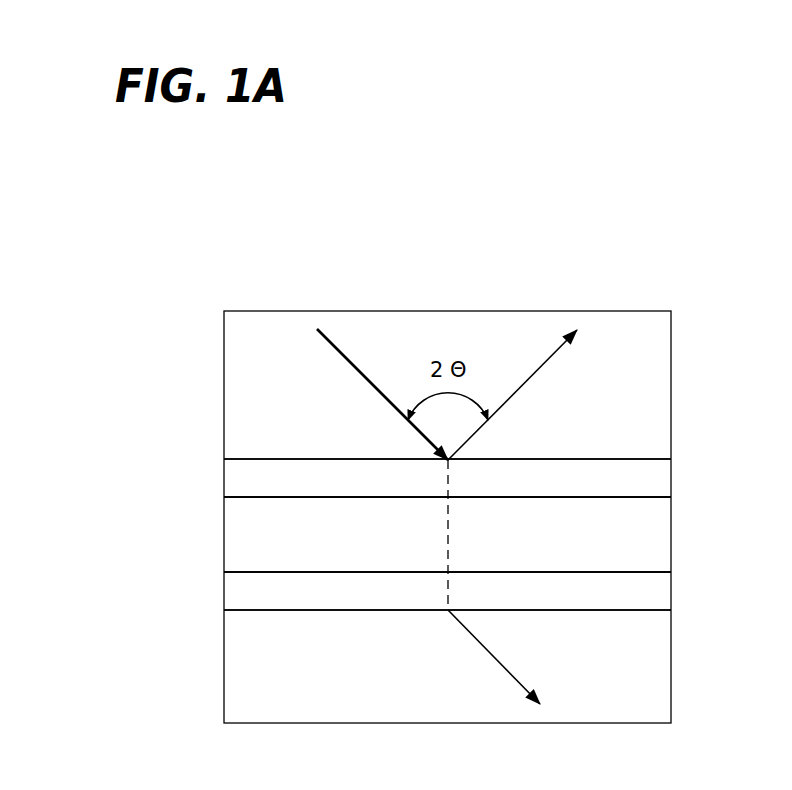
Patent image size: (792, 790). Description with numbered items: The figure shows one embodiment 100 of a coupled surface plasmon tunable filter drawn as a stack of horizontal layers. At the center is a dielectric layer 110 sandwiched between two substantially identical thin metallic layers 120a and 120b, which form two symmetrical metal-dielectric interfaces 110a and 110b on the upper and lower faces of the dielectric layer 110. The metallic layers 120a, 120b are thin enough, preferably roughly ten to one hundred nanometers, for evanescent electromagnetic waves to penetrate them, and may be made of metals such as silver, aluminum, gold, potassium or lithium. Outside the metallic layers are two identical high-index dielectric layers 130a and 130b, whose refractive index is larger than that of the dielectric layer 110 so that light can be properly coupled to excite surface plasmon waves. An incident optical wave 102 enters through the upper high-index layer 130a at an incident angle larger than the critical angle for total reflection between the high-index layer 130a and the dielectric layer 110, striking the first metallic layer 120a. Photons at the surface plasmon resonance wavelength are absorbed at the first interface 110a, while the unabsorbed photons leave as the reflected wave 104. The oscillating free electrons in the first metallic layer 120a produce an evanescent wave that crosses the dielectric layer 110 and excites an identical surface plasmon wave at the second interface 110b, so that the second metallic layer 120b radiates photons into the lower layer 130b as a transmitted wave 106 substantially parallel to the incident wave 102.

The coupled surface plasmon tunable filter 100 is at (200, 244).
The incident optical wave 102 is at (338, 352).
The reflected wave 104 is at (562, 345).
The transmitted wave 106 is at (468, 632).
The dielectric layer 110 is at (623, 547).
The first metal-dielectric interface 110a is at (224, 497).
The second metal-dielectric interface 110b is at (224, 572).
The first metallic layer 120a is at (667, 482).
The second metallic layer 120b is at (667, 595).
The first high-index dielectric layer 130a is at (649, 451).
The second high-index dielectric layer 130b is at (650, 713).